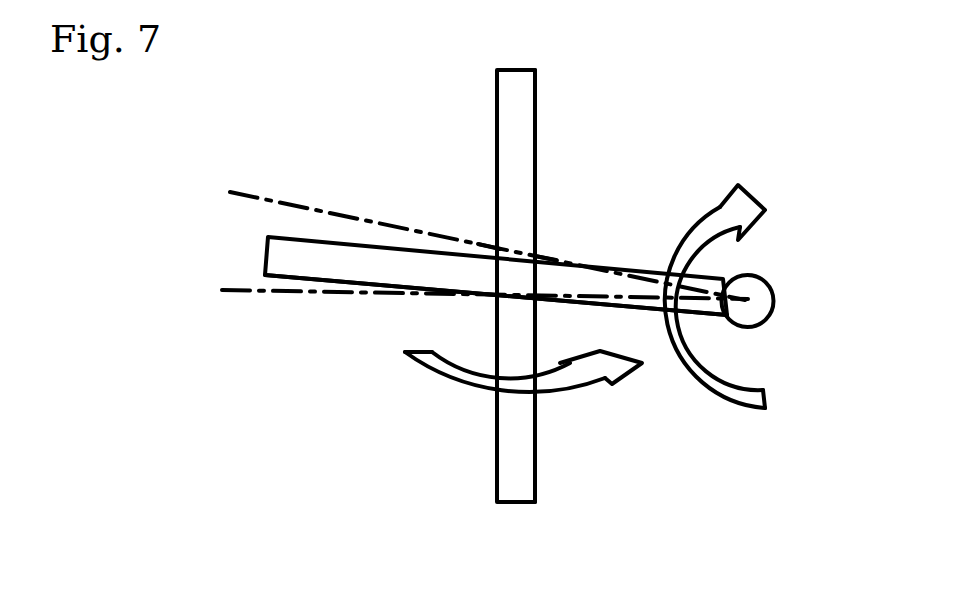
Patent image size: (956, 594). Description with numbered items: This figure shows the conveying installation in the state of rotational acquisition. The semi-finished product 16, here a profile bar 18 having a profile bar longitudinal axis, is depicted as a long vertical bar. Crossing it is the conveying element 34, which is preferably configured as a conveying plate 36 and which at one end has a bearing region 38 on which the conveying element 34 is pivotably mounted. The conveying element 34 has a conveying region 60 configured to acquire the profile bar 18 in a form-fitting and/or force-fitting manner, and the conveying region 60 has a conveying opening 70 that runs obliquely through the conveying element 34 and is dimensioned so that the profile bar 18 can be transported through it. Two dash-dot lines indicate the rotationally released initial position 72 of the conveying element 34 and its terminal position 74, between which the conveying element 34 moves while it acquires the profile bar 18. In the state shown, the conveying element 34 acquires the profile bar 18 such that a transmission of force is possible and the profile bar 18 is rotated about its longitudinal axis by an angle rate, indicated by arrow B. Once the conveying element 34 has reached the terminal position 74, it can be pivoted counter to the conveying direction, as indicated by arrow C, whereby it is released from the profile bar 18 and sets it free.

The semi-finished product 16 is at (512, 127).
The profile bar 18 is at (518, 148).
The conveying element 34 is at (313, 253).
The conveying plate 36 is at (388, 273).
The bearing region 38 is at (753, 307).
The conveying region 60 is at (546, 246).
The conveying opening 70 is at (488, 245).
The rotationally released initial position 72 is at (282, 126).
The terminal position 74 is at (242, 292).
The arrow B is at (585, 368).
The arrow C is at (718, 223).